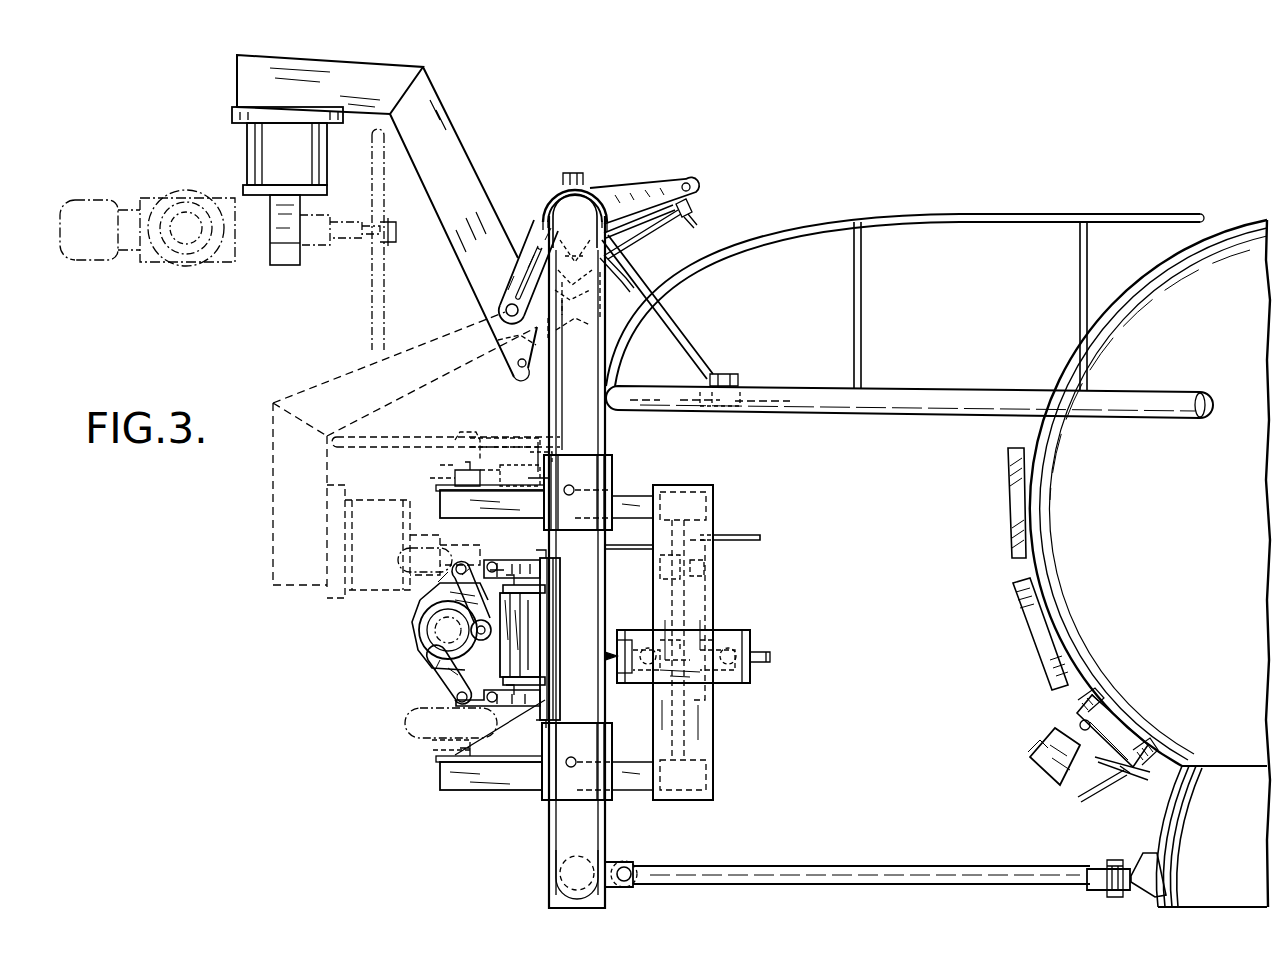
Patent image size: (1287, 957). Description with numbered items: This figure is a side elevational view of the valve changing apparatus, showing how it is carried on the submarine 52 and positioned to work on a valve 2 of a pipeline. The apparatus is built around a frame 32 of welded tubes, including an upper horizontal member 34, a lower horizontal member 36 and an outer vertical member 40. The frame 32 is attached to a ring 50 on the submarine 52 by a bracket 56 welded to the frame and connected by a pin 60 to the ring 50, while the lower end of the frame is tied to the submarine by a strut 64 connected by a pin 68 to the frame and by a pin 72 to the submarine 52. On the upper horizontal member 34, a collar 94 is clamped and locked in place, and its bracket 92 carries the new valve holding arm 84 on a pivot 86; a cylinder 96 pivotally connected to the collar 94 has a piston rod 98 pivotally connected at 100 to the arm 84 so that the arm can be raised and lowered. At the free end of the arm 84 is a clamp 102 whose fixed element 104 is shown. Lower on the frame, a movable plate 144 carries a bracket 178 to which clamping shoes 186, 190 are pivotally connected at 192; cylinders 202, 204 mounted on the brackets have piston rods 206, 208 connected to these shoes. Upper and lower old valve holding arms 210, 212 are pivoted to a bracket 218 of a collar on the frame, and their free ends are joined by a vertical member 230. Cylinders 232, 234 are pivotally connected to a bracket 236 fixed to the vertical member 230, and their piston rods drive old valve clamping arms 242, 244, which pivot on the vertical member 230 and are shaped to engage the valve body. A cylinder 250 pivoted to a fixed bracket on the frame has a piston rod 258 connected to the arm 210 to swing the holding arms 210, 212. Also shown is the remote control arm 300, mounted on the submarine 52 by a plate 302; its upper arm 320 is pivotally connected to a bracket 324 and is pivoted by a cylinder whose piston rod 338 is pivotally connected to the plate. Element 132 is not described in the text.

The valve 2 is at (498, 440).
The frame 32 is at (541, 837).
The upper horizontal member 34 is at (600, 184).
The lower horizontal member 36 is at (568, 876).
The outer vertical member 40 is at (608, 440).
The ring 50 is at (935, 392).
The submarine 52 is at (1064, 562).
The bracket 56 is at (690, 340).
The pin 60 is at (733, 374).
The strut 64 is at (862, 864).
The pin 68 is at (630, 864).
The pin 72 is at (1112, 860).
The new valve holding arm 84 is at (470, 172).
The pivot 86 is at (505, 308).
The bracket 92 is at (536, 242).
The collar 94 is at (556, 194).
The cylinder 96 is at (640, 244).
The piston rod 98 is at (566, 335).
The pivot connection 100 is at (515, 368).
The clamp 102 is at (236, 166).
The fixed element 104 is at (285, 262).
The lower plate 132 is at (545, 680).
The movable plate 144 is at (522, 646).
The bracket 178 is at (540, 596).
The clamping shoe 186 is at (420, 638).
The clamping shoe 190 is at (435, 668).
The pivot 192 is at (490, 628).
The cylinder 202 is at (550, 575).
The cylinder 204 is at (520, 703).
The piston rod 206 is at (492, 560).
The piston rod 208 is at (447, 649).
The upper old valve holding arm 210 is at (633, 496).
The lower old valve holding arm 212 is at (637, 788).
The bracket 218 is at (440, 490).
The vertical member 230 is at (705, 588).
The cylinder 232 is at (760, 651).
The cylinder 234 is at (625, 686).
The bracket 236 is at (735, 684).
The old valve clamping arm 242 is at (748, 536).
The old valve clamping arm 244 is at (634, 548).
The cylinder 250 is at (538, 458).
The piston rod 258 is at (455, 474).
The remote control arm 300 is at (1034, 784).
The plate 302 is at (1157, 748).
The upper arm 320 is at (1050, 748).
The bracket 324 is at (1112, 740).
The piston rod 338 is at (1100, 788).